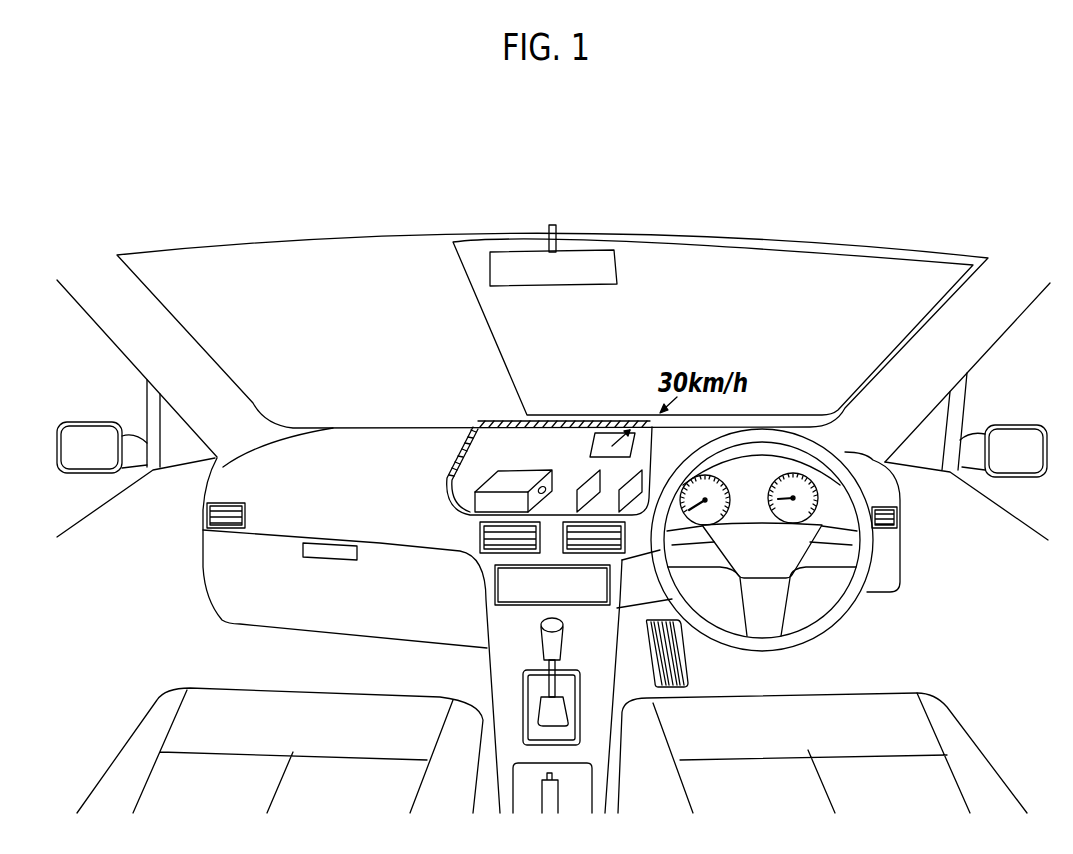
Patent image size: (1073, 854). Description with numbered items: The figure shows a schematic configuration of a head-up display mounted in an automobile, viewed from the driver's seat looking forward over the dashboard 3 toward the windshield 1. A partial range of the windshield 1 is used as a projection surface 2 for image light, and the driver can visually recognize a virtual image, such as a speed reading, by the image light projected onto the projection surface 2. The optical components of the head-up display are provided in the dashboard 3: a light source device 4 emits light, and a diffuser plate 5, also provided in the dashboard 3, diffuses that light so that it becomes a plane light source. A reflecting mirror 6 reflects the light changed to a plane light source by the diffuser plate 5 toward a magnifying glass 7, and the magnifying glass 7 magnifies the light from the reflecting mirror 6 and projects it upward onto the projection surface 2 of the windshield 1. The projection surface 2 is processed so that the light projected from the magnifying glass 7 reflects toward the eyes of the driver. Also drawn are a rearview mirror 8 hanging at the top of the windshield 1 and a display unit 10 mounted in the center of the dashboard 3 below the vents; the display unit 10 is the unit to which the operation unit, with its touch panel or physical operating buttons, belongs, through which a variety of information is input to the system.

The windshield 1 is at (277, 252).
The projection surface 2 is at (477, 300).
The dashboard 3 is at (404, 430).
The light source device 4 is at (503, 470).
The diffuser plate 5 is at (578, 490).
The reflecting mirror 6 is at (625, 490).
The magnifying glass 7 is at (604, 432).
The rearview mirror 8 is at (499, 252).
The display unit 10 is at (495, 578).